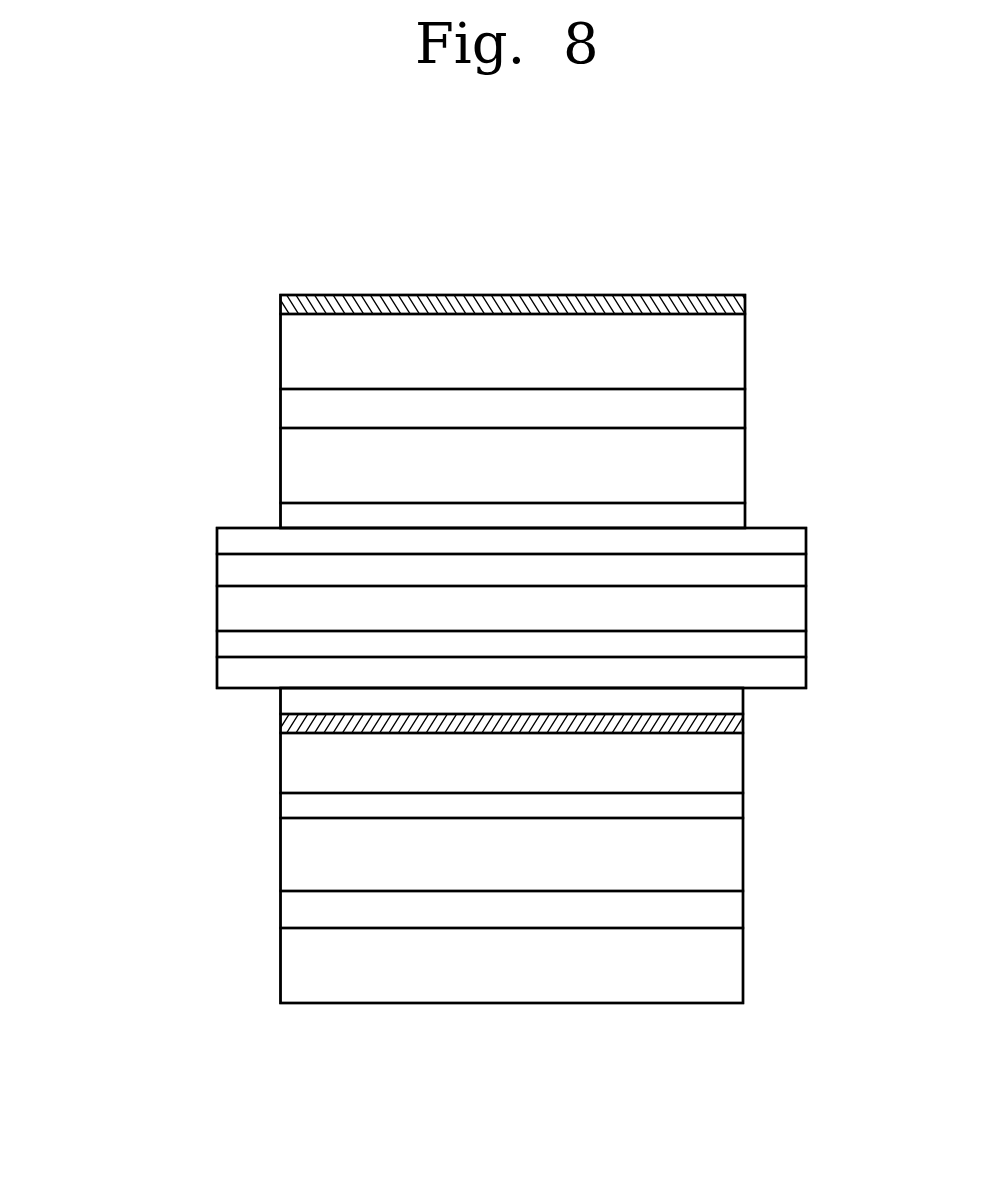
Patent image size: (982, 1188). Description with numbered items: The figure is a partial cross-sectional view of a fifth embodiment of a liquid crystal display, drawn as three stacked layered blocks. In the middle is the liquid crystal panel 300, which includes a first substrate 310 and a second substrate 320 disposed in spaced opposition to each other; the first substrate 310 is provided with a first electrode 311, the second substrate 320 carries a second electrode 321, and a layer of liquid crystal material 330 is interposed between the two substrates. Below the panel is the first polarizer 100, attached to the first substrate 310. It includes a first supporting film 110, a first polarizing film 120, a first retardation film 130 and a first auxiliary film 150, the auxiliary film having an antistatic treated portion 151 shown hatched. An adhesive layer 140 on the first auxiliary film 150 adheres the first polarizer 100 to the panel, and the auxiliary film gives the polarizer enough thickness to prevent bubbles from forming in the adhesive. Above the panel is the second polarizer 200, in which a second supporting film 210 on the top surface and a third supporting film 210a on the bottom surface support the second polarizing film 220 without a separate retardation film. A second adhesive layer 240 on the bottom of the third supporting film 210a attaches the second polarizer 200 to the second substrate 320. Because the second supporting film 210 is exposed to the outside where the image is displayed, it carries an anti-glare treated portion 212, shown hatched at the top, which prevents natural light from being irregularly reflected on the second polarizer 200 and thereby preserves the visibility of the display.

The first polarizer 100 is at (594, 845).
The first supporting film 110 is at (565, 965).
The first polarizing film 120 is at (725, 910).
The first retardation film 130 is at (725, 853).
The adhesive layer 140 is at (725, 706).
The first auxiliary film 150 is at (725, 762).
The antistatic treated portion 151 is at (725, 718).
The second polarizer 200 is at (596, 413).
The second supporting film 210 is at (725, 352).
The third supporting film 210a is at (725, 471).
The anti-glare treated portion 212 is at (745, 304).
The second polarizing film 220 is at (725, 409).
The second adhesive layer 240 is at (565, 514).
The liquid crystal panel 300 is at (414, 610).
The first substrate 310 is at (454, 675).
The first electrode 311 is at (230, 645).
The second substrate 320 is at (230, 541).
The second electrode 321 is at (230, 571).
The liquid crystal material 330 is at (230, 608).